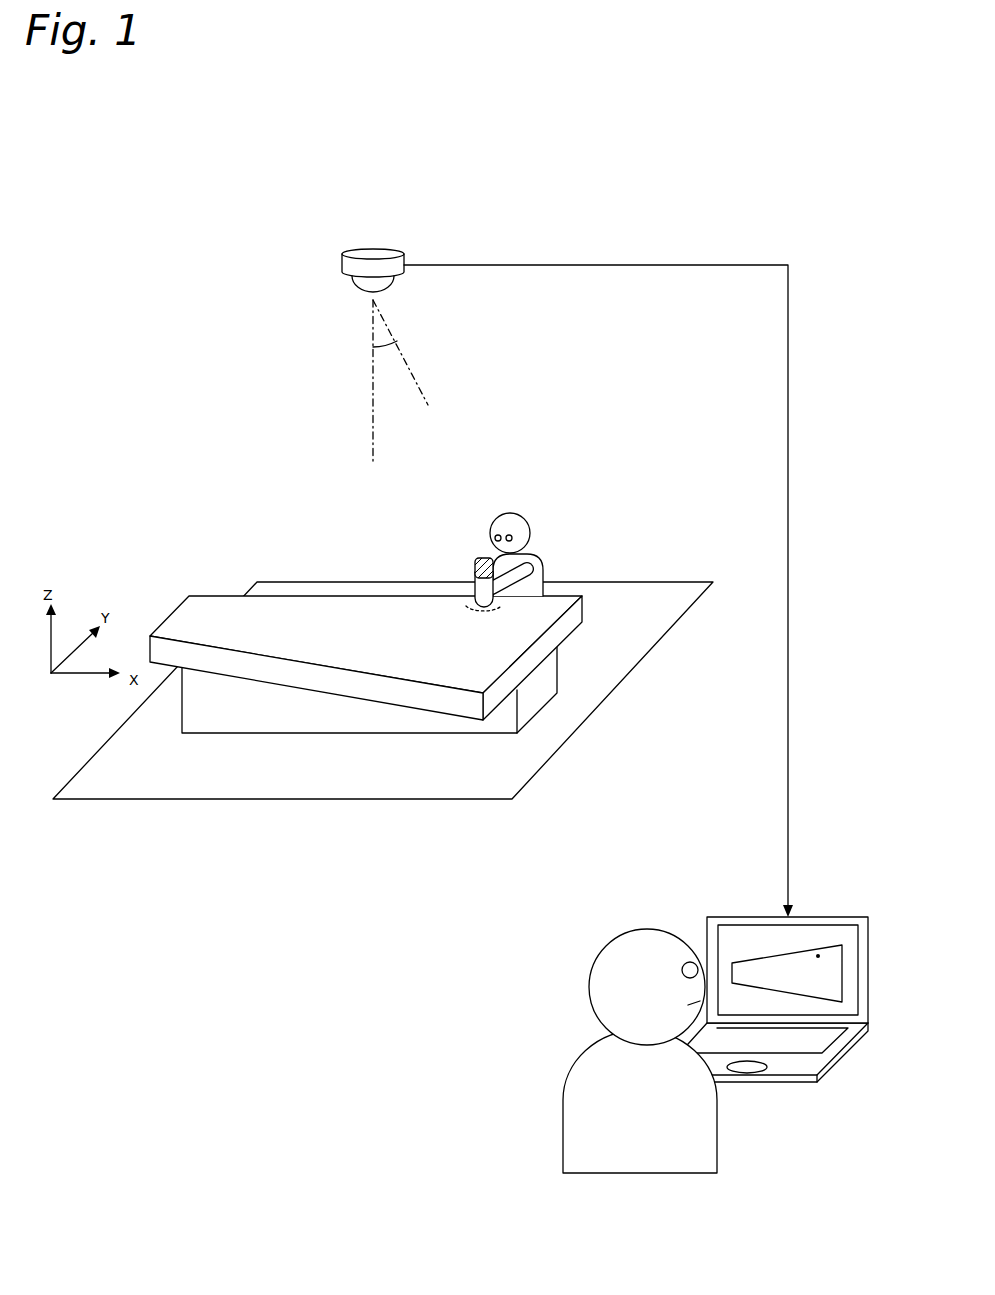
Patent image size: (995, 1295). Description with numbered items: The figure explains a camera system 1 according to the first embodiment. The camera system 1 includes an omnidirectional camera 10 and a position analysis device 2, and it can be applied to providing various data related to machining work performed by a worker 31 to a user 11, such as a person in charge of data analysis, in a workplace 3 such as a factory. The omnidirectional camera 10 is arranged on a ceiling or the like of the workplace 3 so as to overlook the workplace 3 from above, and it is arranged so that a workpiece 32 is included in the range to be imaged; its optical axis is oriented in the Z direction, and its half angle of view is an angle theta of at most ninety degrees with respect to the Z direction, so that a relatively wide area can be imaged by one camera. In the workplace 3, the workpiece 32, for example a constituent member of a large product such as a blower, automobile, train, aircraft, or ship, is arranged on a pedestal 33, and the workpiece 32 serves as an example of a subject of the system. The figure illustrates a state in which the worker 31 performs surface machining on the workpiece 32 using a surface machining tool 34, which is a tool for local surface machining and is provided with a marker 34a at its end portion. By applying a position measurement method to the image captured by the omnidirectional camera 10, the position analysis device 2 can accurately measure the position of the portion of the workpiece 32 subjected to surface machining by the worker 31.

The camera system 1 is at (574, 181).
The position analysis device 2 is at (851, 916).
The workplace 3 is at (90, 332).
The omnidirectional camera 10 is at (345, 262).
The user 11 is at (590, 973).
The worker 31 is at (536, 521).
The workpiece 32 is at (583, 582).
The pedestal 33 is at (560, 663).
The surface machining tool 34 is at (473, 585).
The marker 34a is at (475, 563).